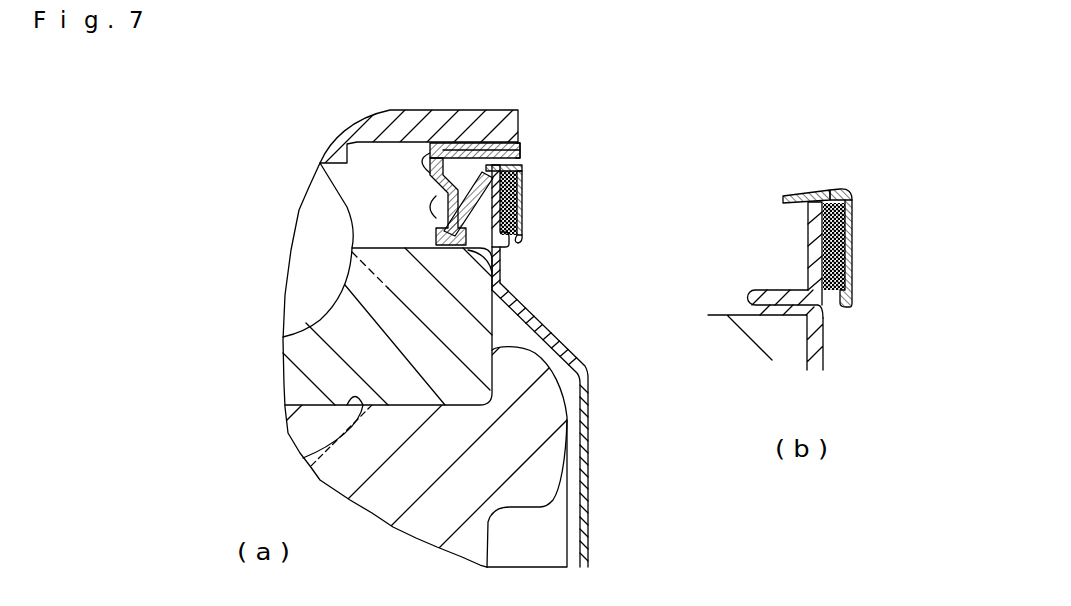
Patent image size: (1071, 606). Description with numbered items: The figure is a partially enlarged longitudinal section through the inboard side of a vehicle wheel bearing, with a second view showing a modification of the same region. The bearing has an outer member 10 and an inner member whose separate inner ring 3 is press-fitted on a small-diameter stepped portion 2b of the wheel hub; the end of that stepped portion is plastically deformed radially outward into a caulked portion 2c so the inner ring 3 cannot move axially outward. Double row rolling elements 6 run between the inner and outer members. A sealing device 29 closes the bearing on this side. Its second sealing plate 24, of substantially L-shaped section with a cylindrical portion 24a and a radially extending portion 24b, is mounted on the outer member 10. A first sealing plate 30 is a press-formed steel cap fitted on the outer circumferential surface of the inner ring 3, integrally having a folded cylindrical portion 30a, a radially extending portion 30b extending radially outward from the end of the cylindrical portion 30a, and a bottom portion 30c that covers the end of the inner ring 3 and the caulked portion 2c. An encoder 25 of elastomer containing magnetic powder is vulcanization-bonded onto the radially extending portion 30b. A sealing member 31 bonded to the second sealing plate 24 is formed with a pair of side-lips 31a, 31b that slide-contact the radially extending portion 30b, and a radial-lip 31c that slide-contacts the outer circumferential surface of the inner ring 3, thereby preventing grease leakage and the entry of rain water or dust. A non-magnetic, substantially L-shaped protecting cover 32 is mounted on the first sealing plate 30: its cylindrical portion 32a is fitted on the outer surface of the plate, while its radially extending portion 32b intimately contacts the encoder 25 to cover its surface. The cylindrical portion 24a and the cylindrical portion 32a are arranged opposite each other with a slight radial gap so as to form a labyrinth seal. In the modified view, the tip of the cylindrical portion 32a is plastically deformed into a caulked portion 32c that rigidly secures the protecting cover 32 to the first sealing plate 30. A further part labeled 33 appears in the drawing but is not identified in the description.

In FIG. 7a, the stepped portion 2b is at (313, 453).
In FIG. 7a, the caulked portion 2c is at (557, 441).
In FIG. 7a, the inner ring 3 is at (307, 373).
In FIG. 7b, the inner ring 3 is at (743, 357).
In FIG. 7a, the rolling elements 6 is at (300, 296).
In FIG. 7a, the outer member 10 is at (388, 120).
In FIG. 7a, the second sealing plate 24 is at (453, 141).
In FIG. 7a, the cylindrical portion 24a is at (463, 140).
In FIG. 7a, the radially extending portion 24b is at (429, 161).
In FIG. 7a, the encoder 25 is at (519, 212).
In FIG. 7b, the encoder 25 is at (852, 263).
In FIG. 7a, the sealing device 29 is at (552, 144).
In FIG. 7a, the first sealing plate 30 is at (566, 366).
In FIG. 7a, the folded cylindrical portion 30a is at (502, 266).
In FIG. 7b, the folded cylindrical portion 30a is at (777, 292).
In FIG. 7a, the radially extending portion 30b is at (513, 232).
In FIG. 7b, the radially extending portion 30b is at (807, 237).
In FIG. 7a, the bottom portion 30c is at (586, 390).
In FIG. 7a, the sealing member 31 is at (341, 200).
In FIG. 7a, the side-lip 31a is at (428, 166).
In FIG. 7a, the side-lip 31b is at (434, 205).
In FIG. 7a, the radial-lip 31c is at (436, 238).
In FIG. 7a, the protecting cover 32 is at (599, 185).
In FIG. 7a, the cylindrical portion 32a is at (522, 165).
In FIG. 7b, the cylindrical portion 32a is at (840, 190).
In FIG. 7a, the radially extending portion 32b is at (524, 197).
In FIG. 7b, the radially extending portion 32b is at (853, 230).
In FIG. 7b, the caulked portion 32c is at (800, 200).
In FIG. 7a, the seal end portion 33 is at (521, 158).